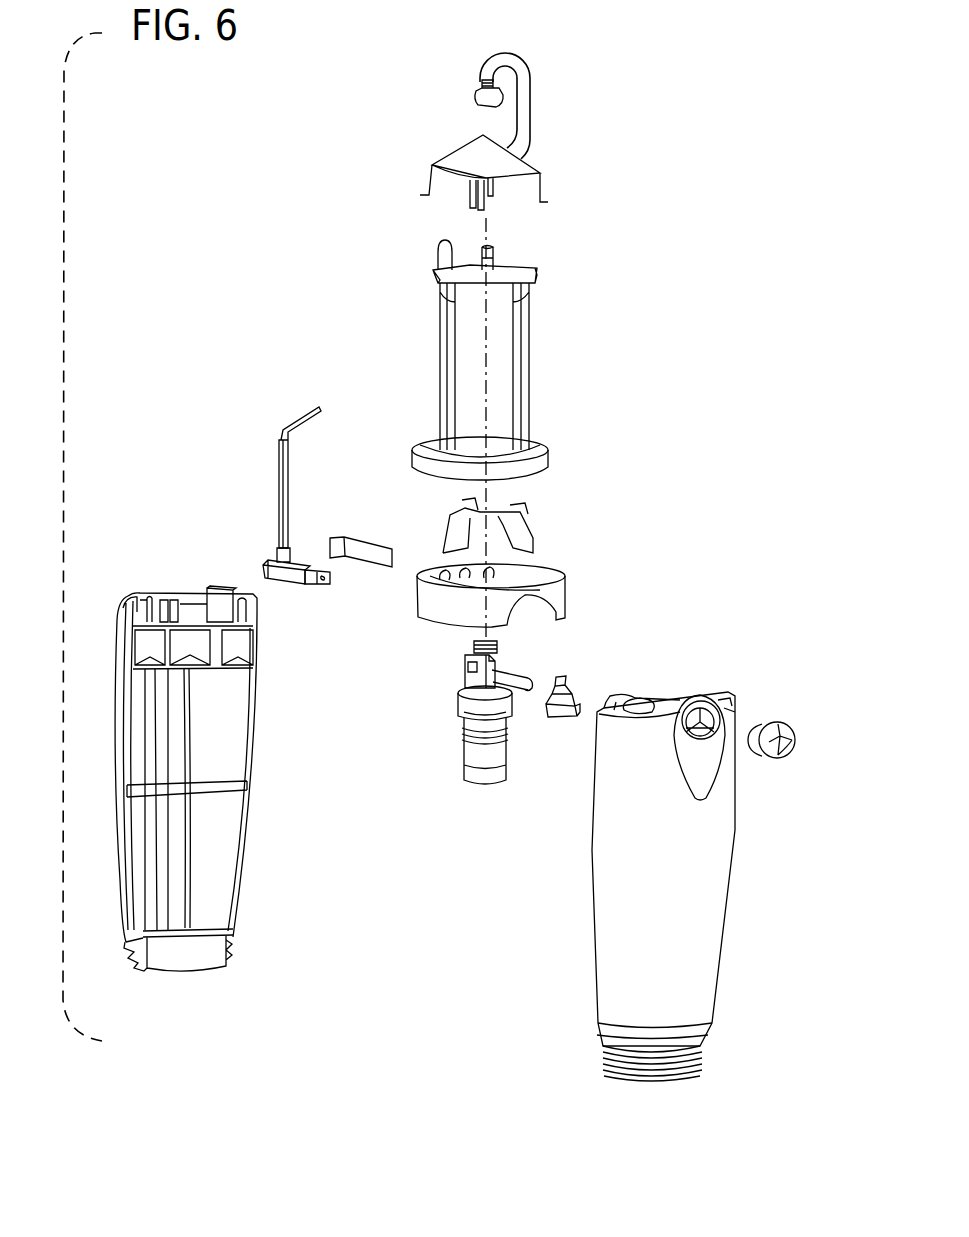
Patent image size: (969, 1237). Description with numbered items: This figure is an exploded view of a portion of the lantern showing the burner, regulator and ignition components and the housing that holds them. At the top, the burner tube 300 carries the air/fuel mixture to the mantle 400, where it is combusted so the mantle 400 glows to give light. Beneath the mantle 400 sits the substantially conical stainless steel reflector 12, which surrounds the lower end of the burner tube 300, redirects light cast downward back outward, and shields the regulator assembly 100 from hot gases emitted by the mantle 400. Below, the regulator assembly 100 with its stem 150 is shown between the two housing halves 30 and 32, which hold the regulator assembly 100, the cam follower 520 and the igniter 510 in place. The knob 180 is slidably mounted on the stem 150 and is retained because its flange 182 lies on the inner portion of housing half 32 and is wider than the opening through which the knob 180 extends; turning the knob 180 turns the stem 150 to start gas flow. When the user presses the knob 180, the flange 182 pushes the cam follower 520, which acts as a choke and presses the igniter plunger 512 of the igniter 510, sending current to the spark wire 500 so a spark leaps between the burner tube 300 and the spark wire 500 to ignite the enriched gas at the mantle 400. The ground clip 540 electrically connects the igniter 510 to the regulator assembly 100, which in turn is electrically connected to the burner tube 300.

The burner tube 300 is at (548, 78).
The mantle 400 is at (476, 95).
The reflector 12 is at (548, 140).
The spark wire 500 is at (305, 421).
The ground clip 540 is at (364, 540).
The igniter 510 is at (287, 585).
The igniter plunger 512 is at (330, 580).
The housing half 30 is at (250, 823).
The stem 150 is at (460, 694).
The regulator assembly 100 is at (466, 770).
The cam follower 520 is at (566, 690).
The knob flange 182 is at (757, 716).
The knob 180 is at (780, 722).
The housing half 32 is at (601, 893).